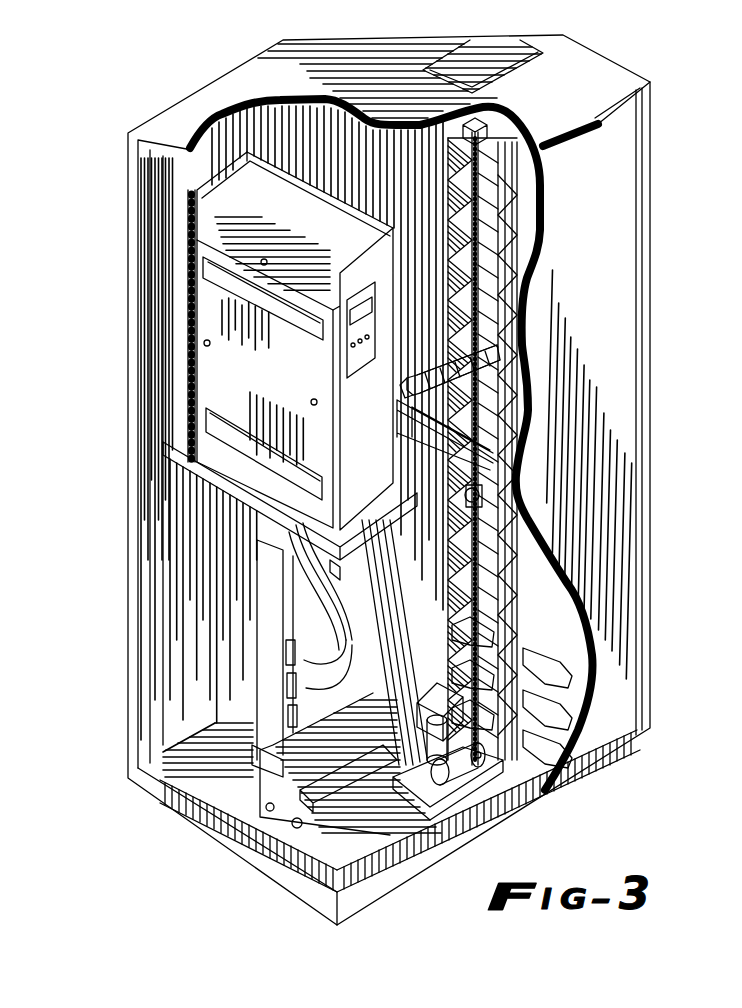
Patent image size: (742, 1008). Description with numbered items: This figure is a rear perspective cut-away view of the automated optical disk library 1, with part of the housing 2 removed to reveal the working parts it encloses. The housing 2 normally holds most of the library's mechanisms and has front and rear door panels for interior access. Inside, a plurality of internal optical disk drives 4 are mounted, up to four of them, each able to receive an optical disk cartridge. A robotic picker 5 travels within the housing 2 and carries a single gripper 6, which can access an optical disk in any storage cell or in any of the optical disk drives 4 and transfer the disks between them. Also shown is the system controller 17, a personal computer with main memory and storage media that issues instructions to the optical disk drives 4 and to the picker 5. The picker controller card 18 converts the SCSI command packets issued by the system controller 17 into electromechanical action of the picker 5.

The automated optical disk library 1 is at (683, 178).
The housing 2 is at (652, 52).
The internal optical disk drives 4 is at (565, 692).
The robotic picker 5 is at (493, 797).
The gripper 6 is at (430, 376).
The system controller 17 is at (281, 390).
The picker controller card 18 is at (277, 733).